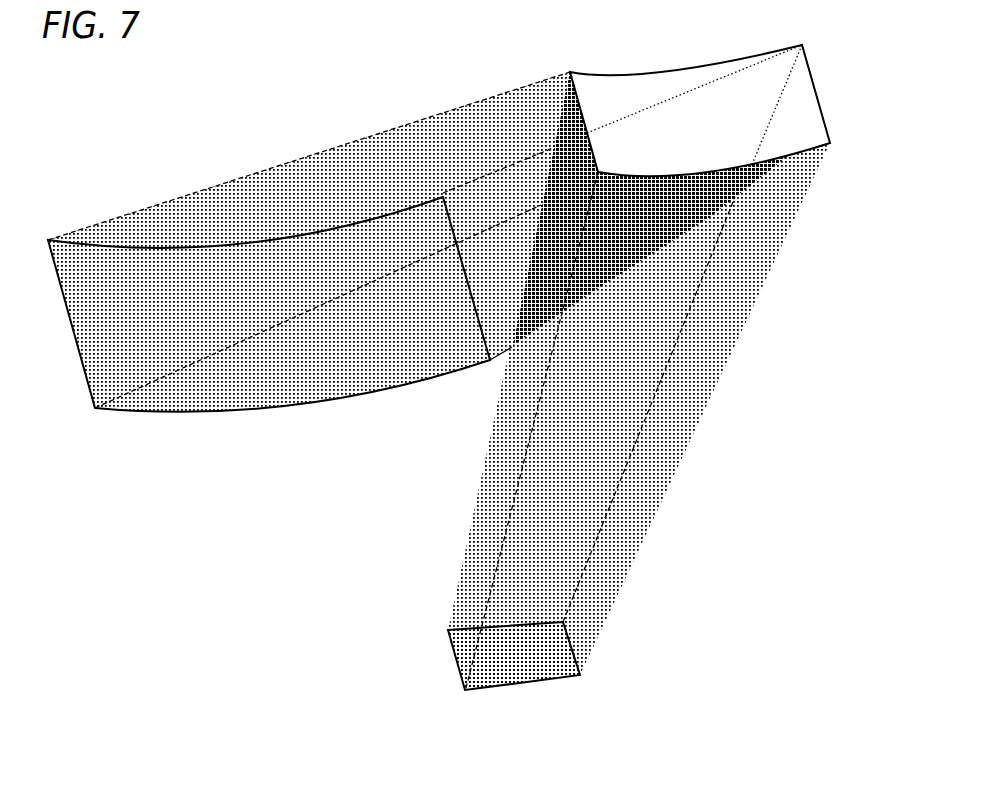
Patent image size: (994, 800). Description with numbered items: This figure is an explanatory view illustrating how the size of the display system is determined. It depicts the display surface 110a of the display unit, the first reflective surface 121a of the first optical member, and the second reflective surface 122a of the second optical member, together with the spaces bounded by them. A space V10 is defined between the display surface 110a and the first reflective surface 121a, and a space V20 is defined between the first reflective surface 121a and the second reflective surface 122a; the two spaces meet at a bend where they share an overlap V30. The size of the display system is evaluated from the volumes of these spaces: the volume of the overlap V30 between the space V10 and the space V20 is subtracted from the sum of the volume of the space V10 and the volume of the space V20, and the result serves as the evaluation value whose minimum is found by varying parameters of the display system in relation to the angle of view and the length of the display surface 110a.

The space V20 is at (275, 193).
The space V10 is at (665, 452).
The overlap V30 is at (683, 218).
The first reflective surface 121a is at (663, 72).
The second reflective surface 122a is at (280, 363).
The display surface 110a is at (530, 660).